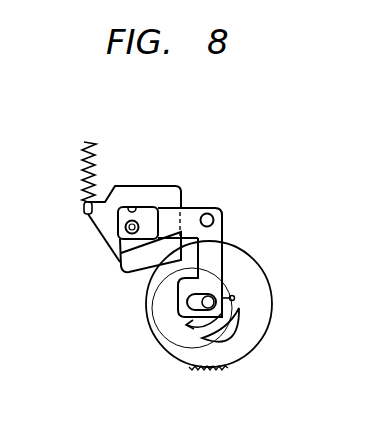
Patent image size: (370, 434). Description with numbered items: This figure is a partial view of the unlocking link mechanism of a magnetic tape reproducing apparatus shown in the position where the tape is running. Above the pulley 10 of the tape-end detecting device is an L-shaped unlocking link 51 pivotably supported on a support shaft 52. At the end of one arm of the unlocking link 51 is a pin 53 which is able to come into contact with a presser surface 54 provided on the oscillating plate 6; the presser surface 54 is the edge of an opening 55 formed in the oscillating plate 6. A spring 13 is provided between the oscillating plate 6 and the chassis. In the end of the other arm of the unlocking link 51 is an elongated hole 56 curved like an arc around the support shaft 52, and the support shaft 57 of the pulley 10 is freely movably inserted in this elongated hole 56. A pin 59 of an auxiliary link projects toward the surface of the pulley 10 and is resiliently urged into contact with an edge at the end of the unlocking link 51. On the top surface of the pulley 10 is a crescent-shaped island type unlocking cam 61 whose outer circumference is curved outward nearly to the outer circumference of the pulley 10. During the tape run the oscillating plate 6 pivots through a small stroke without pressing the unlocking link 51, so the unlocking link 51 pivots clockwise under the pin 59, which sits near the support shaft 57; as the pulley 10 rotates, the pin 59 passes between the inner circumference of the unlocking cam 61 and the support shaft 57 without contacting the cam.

The oscillating plate 6 is at (158, 192).
The pulley 10 is at (167, 338).
The spring 13 is at (80, 152).
The unlocking link 51 is at (217, 253).
The support shaft 52 is at (201, 208).
The pin 53 is at (118, 229).
The presser surface 54 is at (130, 205).
The opening 55 is at (117, 259).
The elongated hole 56 is at (187, 299).
The support shaft 57 is at (183, 324).
The pin 59 is at (234, 300).
The island type unlocking cam 61 is at (232, 333).